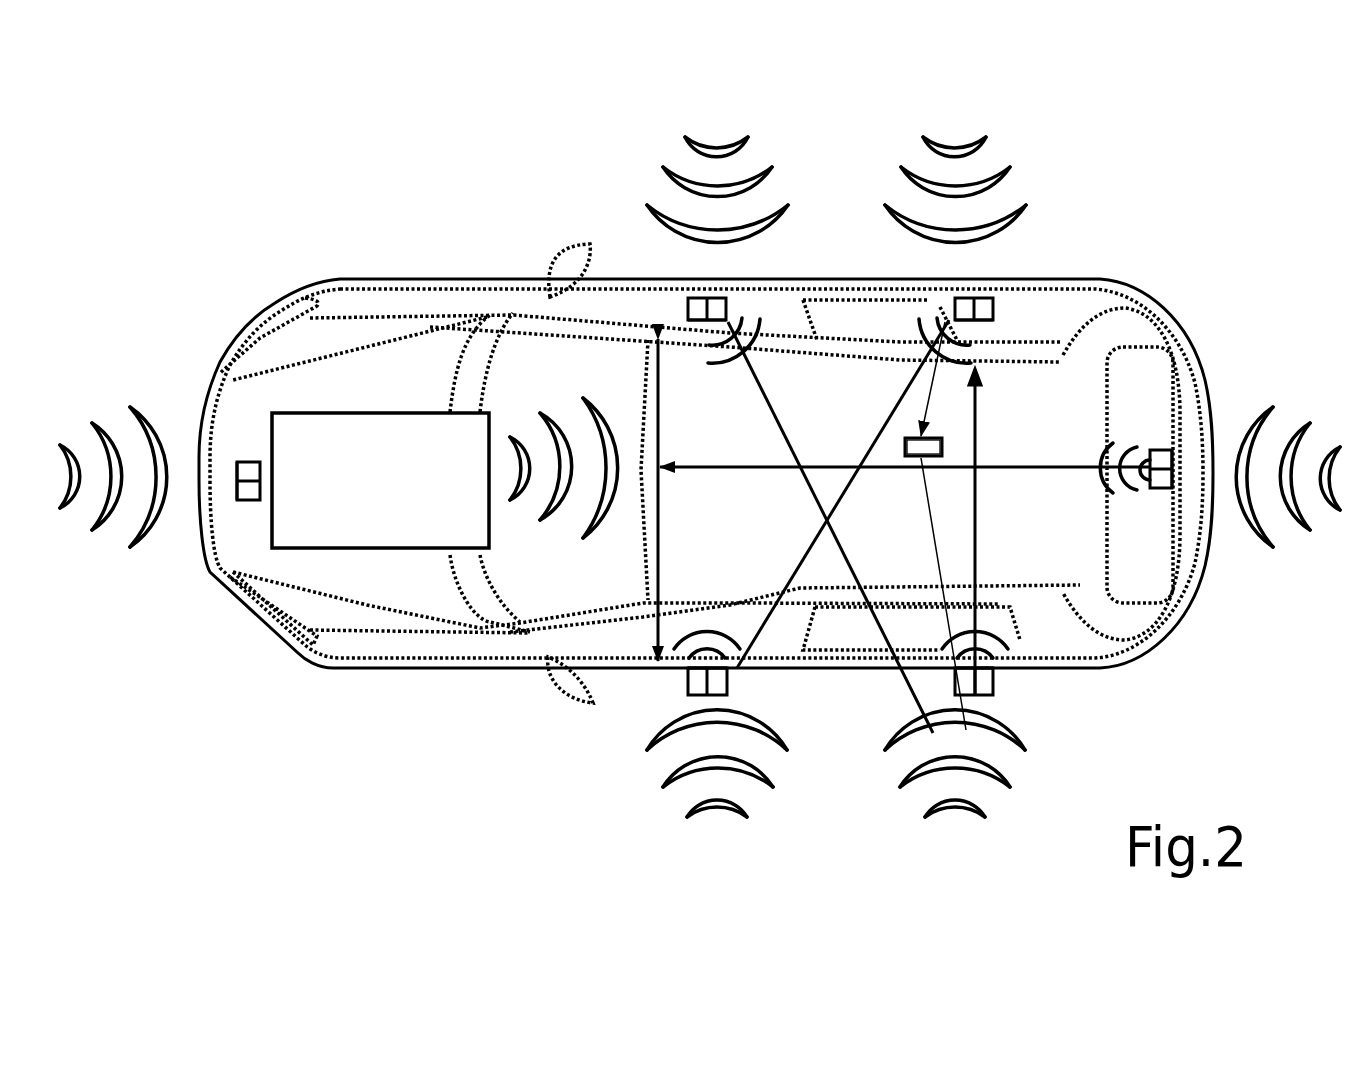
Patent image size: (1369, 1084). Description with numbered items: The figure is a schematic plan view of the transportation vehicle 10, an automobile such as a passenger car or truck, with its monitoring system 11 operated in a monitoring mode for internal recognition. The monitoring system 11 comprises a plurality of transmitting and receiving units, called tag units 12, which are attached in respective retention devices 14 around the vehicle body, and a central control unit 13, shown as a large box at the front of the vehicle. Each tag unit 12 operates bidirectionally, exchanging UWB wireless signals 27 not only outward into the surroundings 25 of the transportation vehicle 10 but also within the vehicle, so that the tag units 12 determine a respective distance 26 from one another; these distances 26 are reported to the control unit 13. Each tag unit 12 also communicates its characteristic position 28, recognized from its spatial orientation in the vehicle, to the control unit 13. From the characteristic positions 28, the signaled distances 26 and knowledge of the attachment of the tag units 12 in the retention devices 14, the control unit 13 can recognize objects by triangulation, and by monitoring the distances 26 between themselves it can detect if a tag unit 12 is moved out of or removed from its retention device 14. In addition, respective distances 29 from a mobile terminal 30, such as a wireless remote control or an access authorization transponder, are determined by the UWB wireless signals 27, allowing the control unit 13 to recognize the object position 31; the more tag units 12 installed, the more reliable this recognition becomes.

The transportation vehicle 10 is at (460, 670).
The monitoring system 11 is at (283, 618).
The tag unit 12 is at (950, 310).
The control unit 13 is at (377, 550).
The retention device 14 is at (688, 300).
The surroundings 25 is at (462, 164).
The distance 26 is at (778, 408).
The UWB wireless signal 27 is at (718, 357).
The characteristic position 28 is at (950, 298).
The distance 29 is at (927, 400).
The mobile terminal 30 is at (900, 432).
The object position 31 is at (903, 460).